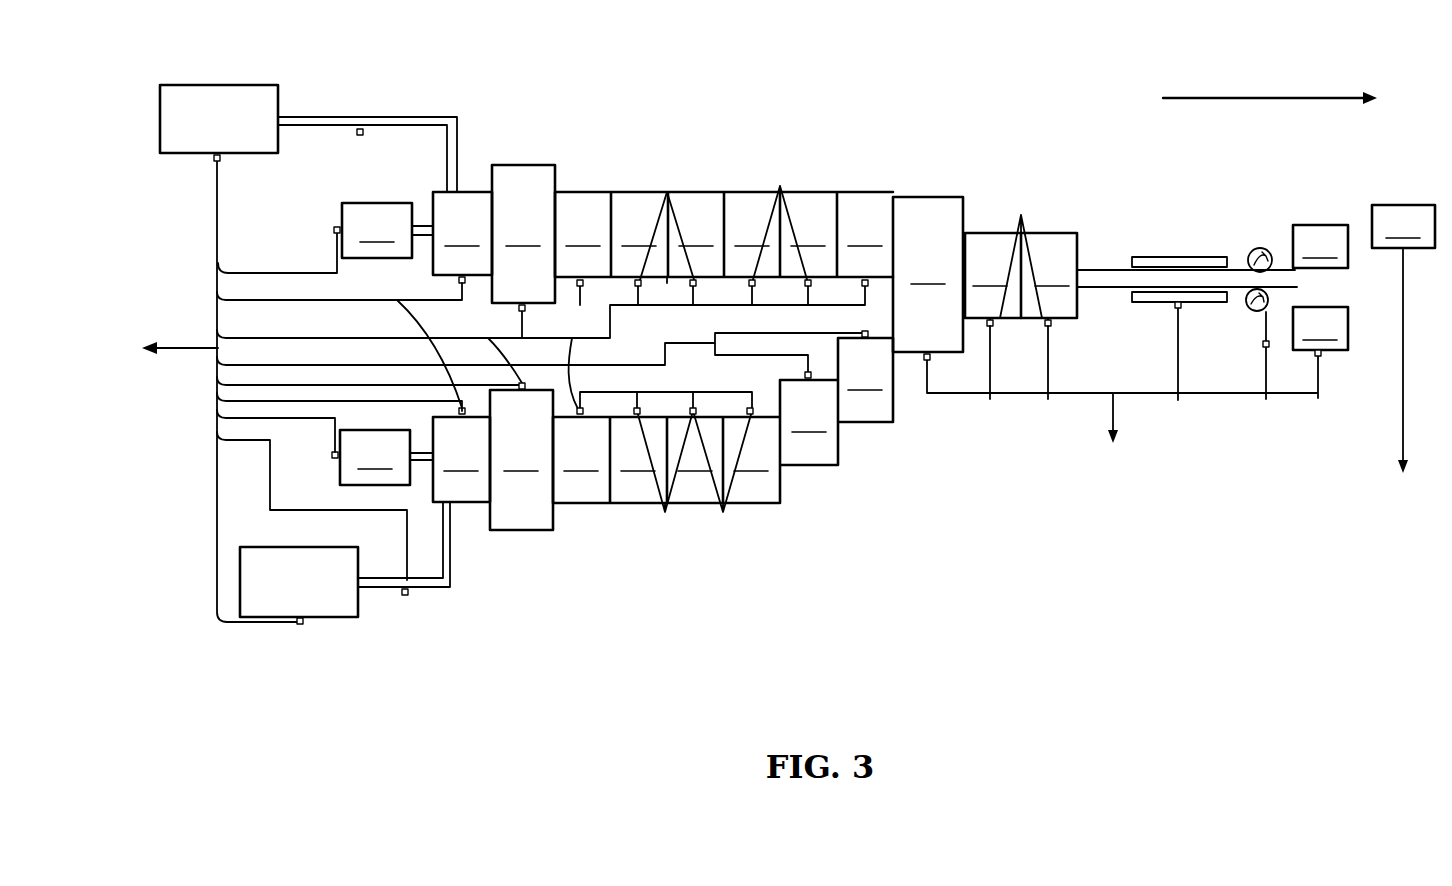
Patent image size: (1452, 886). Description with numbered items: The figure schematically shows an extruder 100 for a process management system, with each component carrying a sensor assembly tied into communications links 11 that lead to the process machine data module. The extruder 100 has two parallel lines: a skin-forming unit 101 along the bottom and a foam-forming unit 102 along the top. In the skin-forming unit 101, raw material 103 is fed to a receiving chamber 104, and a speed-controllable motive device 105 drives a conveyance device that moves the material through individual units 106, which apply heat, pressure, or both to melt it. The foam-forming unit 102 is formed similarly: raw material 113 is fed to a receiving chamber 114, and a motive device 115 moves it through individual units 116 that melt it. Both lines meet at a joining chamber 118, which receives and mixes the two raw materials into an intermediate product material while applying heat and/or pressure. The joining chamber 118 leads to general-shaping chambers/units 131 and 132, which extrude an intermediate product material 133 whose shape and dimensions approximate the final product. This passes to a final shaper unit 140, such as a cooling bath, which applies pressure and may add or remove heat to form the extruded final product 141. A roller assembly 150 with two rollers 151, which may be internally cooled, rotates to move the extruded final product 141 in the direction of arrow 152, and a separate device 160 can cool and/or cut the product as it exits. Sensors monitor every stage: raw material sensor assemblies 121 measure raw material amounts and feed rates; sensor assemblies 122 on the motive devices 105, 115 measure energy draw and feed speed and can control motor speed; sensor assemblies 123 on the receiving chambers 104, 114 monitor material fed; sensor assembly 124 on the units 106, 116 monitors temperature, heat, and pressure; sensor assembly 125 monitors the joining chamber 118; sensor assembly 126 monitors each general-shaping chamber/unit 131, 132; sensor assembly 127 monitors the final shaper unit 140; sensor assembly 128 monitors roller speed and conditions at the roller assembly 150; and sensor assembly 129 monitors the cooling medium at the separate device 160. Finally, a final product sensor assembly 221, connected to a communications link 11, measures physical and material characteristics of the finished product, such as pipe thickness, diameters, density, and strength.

The communications links 11 is at (217, 216).
The extruder 100 is at (398, 68).
The skin-forming unit 101 is at (617, 593).
The foam-forming unit 102 is at (510, 148).
The raw material 103 is at (340, 547).
The receiving chamber 104 is at (461, 459).
The motive device 105 is at (386, 457).
The individual units 106 is at (723, 420).
The raw material 113 is at (176, 85).
The receiving chamber 114 is at (462, 233).
The motive device 115 is at (387, 230).
The individual units 116 is at (724, 234).
The joining chamber 118 is at (928, 274).
The raw material sensor assemblies 121 is at (222, 160).
The sensor assemblies 122 is at (334, 228).
The sensor assemblies 123 is at (460, 281).
The sensor assembly 124 is at (519, 313).
The sensor assembly 125 is at (927, 361).
The sensor assembly 126 is at (1021, 215).
The sensor assembly 127 is at (1174, 308).
The sensor assembly 128 is at (1265, 347).
The sensor assembly 129 is at (1320, 356).
The general-shaping chamber/unit 131 is at (993, 275).
The general-shaping chamber/unit 132 is at (1049, 275).
The intermediate product material 133 is at (1100, 268).
The final shaper unit 140 is at (1152, 256).
The extruded final product 141 is at (1278, 268).
The roller assembly 150 is at (1265, 232).
The rollers 151 is at (1252, 252).
The arrow 152 is at (1240, 98).
The separate device 160 is at (1320, 287).
The final product sensor assembly 221 is at (1403, 226).